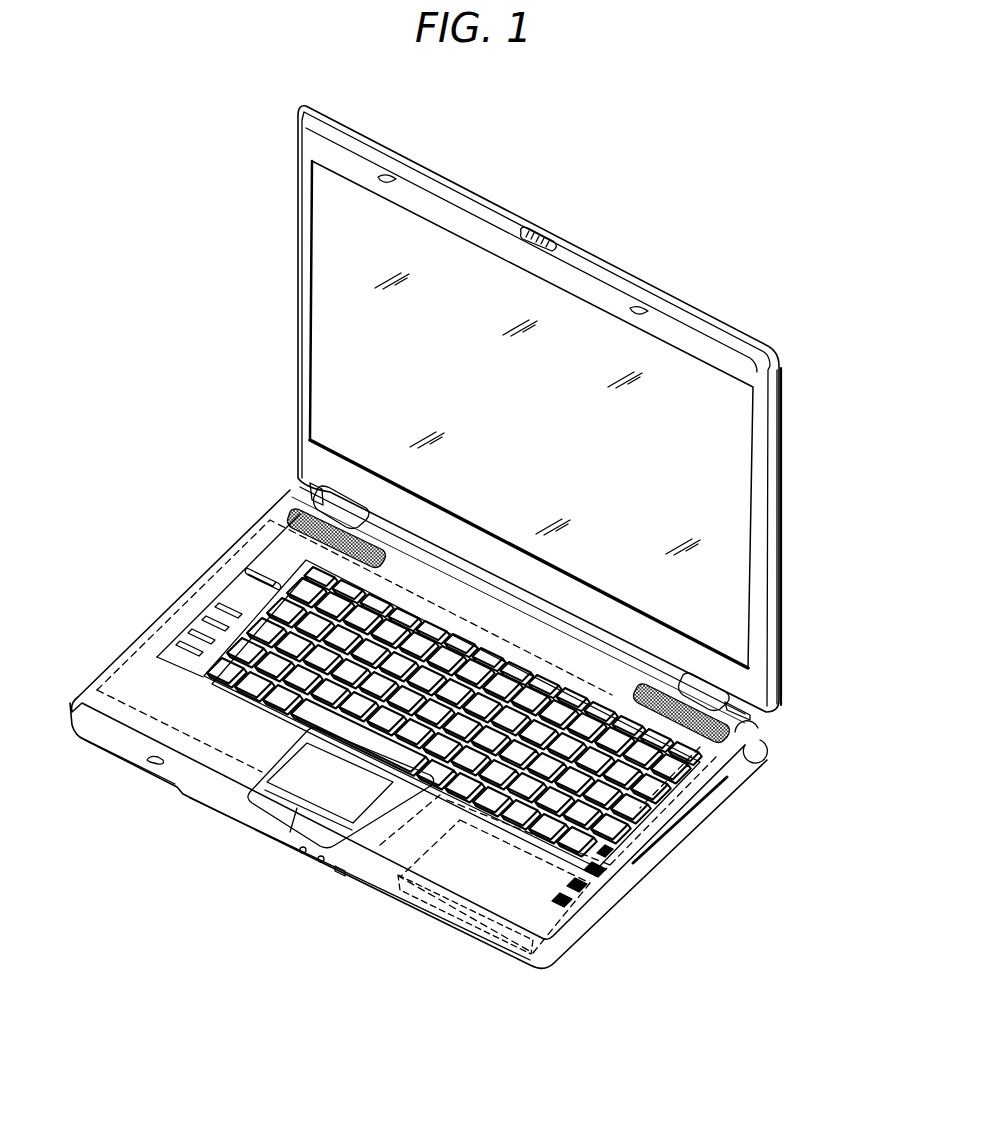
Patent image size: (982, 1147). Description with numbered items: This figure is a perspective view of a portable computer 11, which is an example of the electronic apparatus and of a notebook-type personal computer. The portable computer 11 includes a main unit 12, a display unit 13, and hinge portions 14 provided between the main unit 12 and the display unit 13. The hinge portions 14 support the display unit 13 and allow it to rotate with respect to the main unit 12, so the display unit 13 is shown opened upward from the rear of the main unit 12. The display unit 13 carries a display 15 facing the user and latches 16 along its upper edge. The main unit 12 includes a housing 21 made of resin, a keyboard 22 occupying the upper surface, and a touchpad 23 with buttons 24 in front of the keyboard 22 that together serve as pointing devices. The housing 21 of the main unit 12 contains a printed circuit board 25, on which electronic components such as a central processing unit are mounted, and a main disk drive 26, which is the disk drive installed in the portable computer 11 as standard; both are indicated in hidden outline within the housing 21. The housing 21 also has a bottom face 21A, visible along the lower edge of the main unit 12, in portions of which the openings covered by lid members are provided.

The portable computer 11 is at (655, 230).
The main unit 12 is at (200, 555).
The display unit 13 is at (262, 282).
The hinge portions 14 is at (340, 505).
The display 15 is at (735, 486).
The latches 16 is at (384, 182).
The housing 21 is at (130, 643).
The bottom face 21A is at (205, 812).
The keyboard 22 is at (628, 800).
The touchpad 23 is at (300, 765).
The buttons 24 is at (312, 830).
The printed circuit board 25 is at (648, 858).
The main disk drive 26 is at (456, 930).